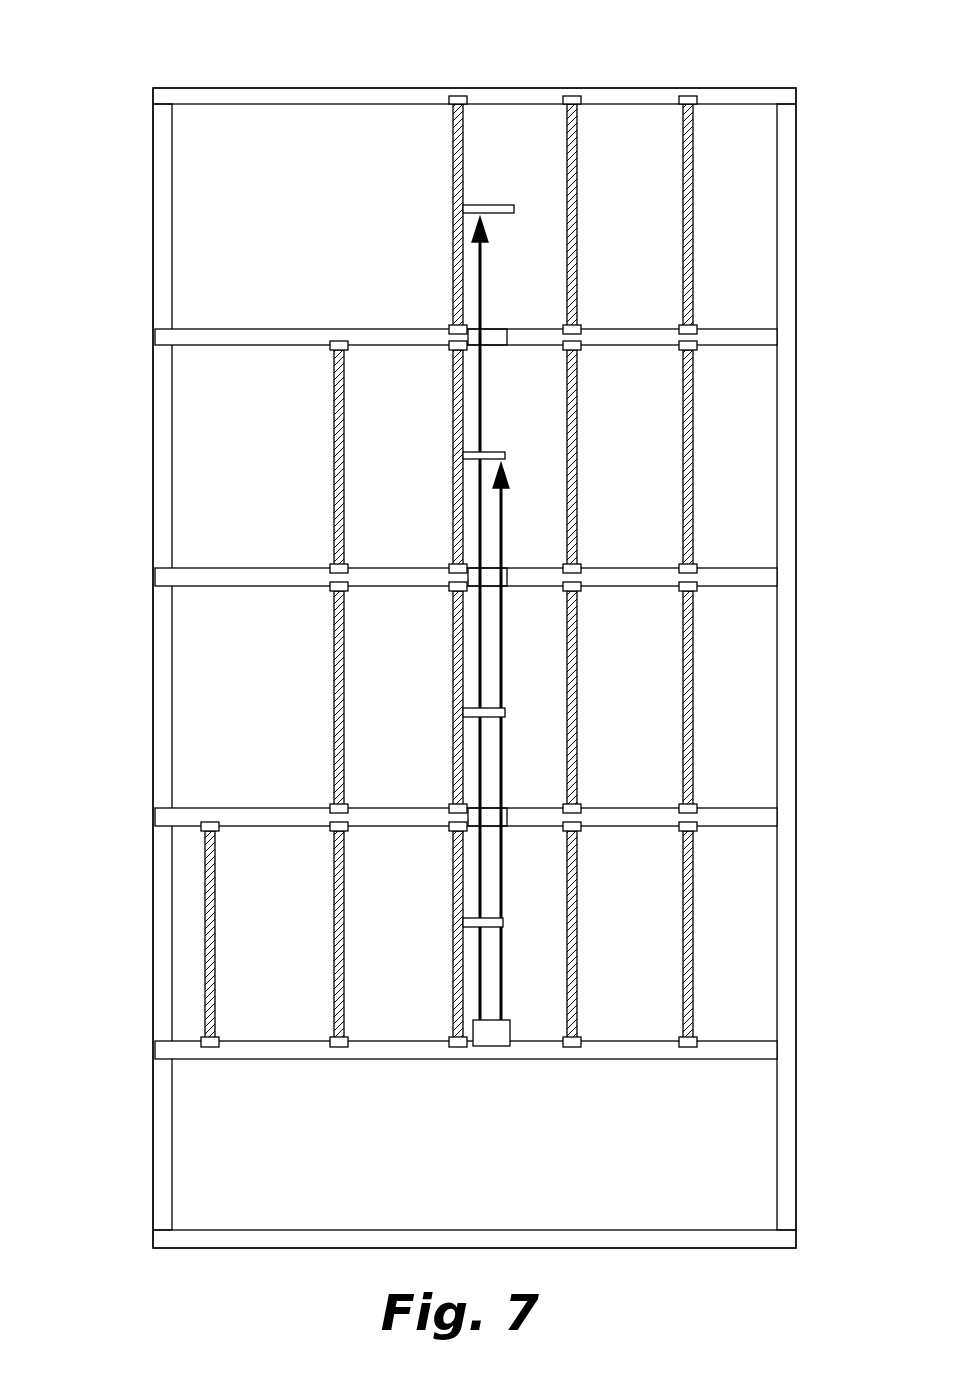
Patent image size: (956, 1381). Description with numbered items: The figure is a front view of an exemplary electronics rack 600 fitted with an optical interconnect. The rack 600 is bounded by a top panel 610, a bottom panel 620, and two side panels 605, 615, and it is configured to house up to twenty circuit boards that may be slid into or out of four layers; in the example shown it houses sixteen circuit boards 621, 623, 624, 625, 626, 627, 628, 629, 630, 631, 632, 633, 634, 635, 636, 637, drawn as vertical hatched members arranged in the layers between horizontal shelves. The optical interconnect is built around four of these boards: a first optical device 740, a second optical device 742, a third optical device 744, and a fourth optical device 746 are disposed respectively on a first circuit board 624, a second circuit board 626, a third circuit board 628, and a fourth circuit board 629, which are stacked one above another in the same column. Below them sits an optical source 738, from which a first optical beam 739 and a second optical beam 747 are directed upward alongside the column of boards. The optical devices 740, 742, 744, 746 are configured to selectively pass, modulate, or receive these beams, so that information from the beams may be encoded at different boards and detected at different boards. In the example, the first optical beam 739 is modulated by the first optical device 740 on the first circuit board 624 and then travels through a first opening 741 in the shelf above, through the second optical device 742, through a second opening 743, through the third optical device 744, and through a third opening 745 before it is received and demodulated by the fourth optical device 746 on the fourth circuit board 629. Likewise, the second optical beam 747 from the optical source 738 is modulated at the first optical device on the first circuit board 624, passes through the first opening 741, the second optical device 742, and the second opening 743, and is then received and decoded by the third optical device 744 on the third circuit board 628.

The electronics rack 600 is at (110, 99).
The side panel 605 is at (162, 382).
The top panel 610 is at (340, 98).
The side panel 615 is at (790, 530).
The bottom panel 620 is at (733, 1238).
The circuit board 621 is at (215, 995).
The circuit board 623 is at (344, 990).
The first circuit board 624 is at (453, 915).
The circuit board 625 is at (344, 753).
The second circuit board 626 is at (453, 680).
The circuit board 627 is at (344, 521).
The third circuit board 628 is at (453, 447).
The fourth circuit board 629 is at (453, 170).
The circuit board 630 is at (683, 200).
The circuit board 631 is at (578, 272).
The circuit board 632 is at (684, 438).
The circuit board 633 is at (578, 513).
The circuit board 634 is at (684, 692).
The circuit board 635 is at (578, 770).
The circuit board 636 is at (684, 915).
The circuit board 637 is at (578, 990).
The optical source 738 is at (488, 1046).
The first optical beam 739 is at (482, 993).
The first optical device 740 is at (504, 922).
The first opening 741 is at (506, 818).
The second optical device 742 is at (506, 713).
The second opening 743 is at (506, 585).
The third optical device 744 is at (506, 456).
The third opening 745 is at (506, 340).
The fourth optical device 746 is at (480, 207).
The second optical beam 747 is at (503, 955).